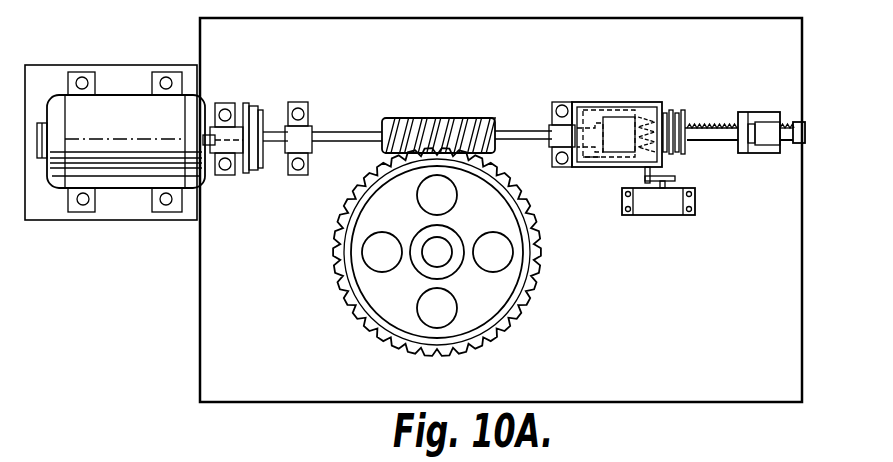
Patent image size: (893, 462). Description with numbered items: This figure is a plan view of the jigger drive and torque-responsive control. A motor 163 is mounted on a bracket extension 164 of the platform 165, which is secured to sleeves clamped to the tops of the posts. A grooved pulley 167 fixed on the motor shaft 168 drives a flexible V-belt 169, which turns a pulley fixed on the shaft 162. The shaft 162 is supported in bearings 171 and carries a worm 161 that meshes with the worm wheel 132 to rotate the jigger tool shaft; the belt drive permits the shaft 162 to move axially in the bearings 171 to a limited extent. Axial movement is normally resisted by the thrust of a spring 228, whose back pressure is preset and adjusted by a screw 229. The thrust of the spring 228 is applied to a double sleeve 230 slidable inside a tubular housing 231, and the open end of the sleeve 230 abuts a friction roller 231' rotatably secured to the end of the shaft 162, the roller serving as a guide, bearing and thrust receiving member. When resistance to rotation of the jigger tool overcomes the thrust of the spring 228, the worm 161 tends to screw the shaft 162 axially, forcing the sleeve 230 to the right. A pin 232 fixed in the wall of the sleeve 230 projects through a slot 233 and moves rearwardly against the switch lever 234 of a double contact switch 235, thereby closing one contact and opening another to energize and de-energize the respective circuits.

The worm wheel 132 is at (537, 303).
The worm 161 is at (457, 92).
The shaft 162 is at (318, 133).
The motor 163 is at (58, 98).
The bracket extension 164 is at (140, 38).
The platform 165 is at (200, 272).
The grooved pulley 167 is at (263, 110).
The motor shaft 168 is at (242, 155).
The flexible V-belt 169 is at (250, 103).
The bearings 171 is at (243, 85).
The spring 228 is at (672, 113).
The screw 229 is at (705, 126).
The double sleeve 230 is at (615, 106).
The tubular housing 231 is at (617, 106).
The friction roller 231' is at (568, 181).
The pin 232 is at (645, 178).
The slot 233 is at (655, 177).
The switch lever 234 is at (676, 178).
The double contact switch 235 is at (695, 205).